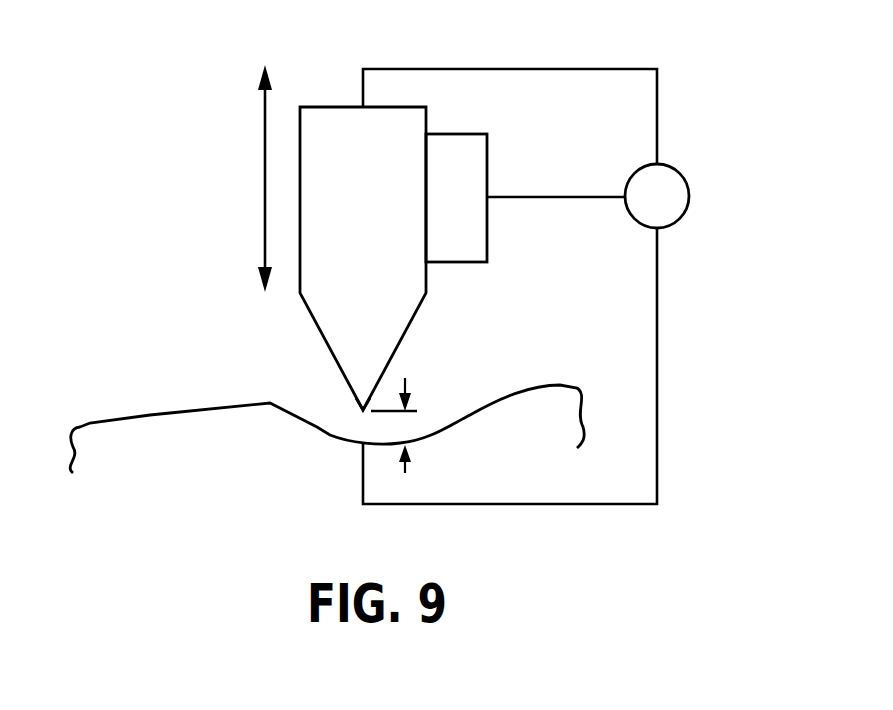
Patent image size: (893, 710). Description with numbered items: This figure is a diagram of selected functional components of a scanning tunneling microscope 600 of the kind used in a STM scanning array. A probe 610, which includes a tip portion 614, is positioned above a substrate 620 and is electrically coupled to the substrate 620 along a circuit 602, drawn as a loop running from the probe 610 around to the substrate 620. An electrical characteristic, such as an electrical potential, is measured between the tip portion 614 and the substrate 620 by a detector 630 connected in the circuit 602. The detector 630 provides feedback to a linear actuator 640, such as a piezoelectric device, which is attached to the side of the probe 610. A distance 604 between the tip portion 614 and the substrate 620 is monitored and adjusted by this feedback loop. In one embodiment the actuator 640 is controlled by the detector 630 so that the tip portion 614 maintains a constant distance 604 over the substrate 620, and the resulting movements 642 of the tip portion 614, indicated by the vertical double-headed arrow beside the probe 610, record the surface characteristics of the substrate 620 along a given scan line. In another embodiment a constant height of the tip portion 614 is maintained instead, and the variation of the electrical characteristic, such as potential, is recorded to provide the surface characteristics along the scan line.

The scanning tunneling microscope 600 is at (142, 195).
The circuit 602 is at (600, 69).
The distance 604 is at (405, 380).
The probe 610 is at (388, 206).
The tip portion 614 is at (353, 371).
The substrate 620 is at (150, 415).
The detector 630 is at (660, 203).
The linear actuator 640 is at (463, 172).
The movements 642 is at (262, 168).